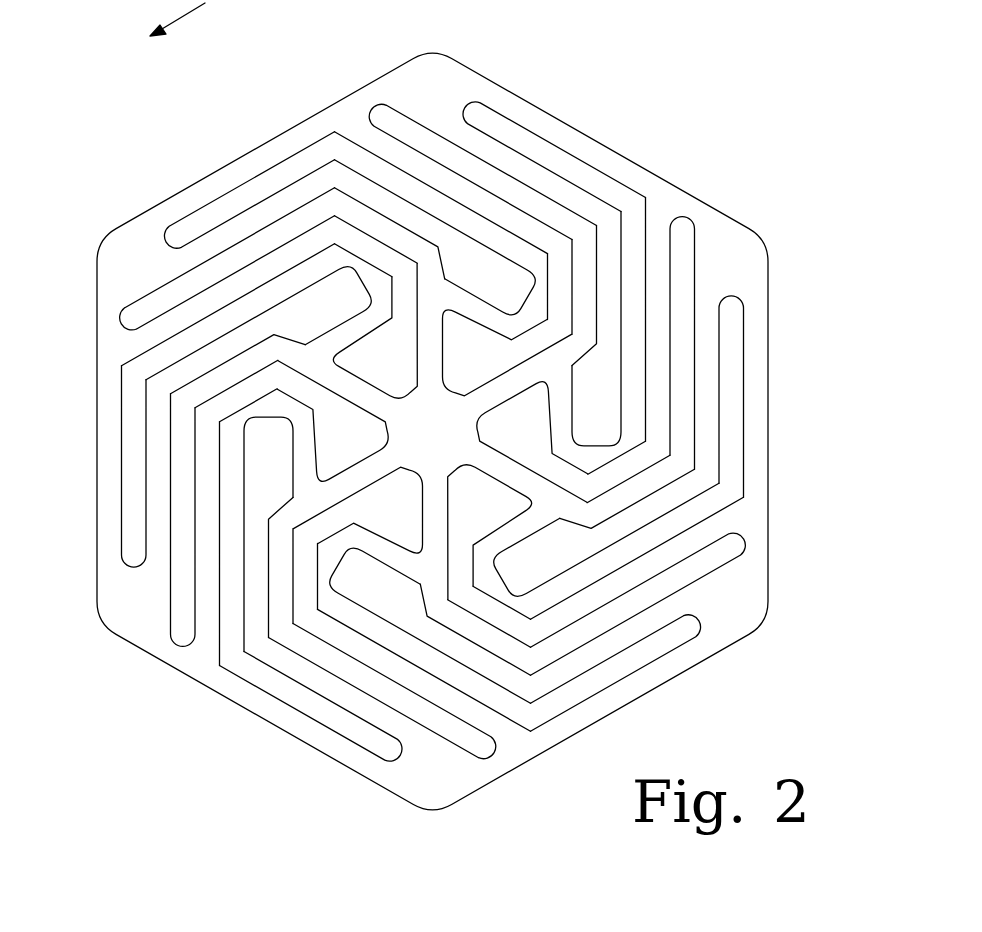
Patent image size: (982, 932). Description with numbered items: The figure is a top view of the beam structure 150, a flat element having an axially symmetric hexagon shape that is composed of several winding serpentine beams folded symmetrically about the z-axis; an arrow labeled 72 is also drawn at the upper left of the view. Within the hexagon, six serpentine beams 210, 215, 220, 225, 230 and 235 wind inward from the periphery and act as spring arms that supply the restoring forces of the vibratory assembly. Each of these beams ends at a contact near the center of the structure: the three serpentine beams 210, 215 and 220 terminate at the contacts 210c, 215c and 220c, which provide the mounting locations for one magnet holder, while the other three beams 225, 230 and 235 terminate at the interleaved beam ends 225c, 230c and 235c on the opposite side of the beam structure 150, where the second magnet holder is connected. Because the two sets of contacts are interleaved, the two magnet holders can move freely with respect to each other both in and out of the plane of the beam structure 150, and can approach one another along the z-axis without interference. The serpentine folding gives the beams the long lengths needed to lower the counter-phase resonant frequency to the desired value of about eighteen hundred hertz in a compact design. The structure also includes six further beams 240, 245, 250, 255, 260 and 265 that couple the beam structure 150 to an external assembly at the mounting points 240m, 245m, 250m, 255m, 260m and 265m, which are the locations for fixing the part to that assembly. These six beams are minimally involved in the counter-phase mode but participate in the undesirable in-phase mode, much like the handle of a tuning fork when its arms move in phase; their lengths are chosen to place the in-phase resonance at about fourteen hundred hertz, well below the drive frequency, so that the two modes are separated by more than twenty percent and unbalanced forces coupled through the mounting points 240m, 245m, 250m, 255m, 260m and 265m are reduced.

The flow direction arrow 72 is at (177, 18).
The beam structure 150 is at (353, 770).
The serpentine beam 210 is at (228, 292).
The serpentine beam 215 is at (650, 457).
The serpentine beam 220 is at (437, 695).
The serpentine beam 225 is at (433, 173).
The serpentine beam 230 is at (597, 598).
The serpentine beam 235 is at (215, 407).
The beam 240 is at (378, 195).
The beam 245 is at (615, 315).
The beam 250 is at (657, 508).
The beam 255 is at (487, 665).
The beam 260 is at (313, 680).
The beam 265 is at (205, 355).
The contact 210c is at (405, 364).
The contact 215c is at (542, 444).
The contact 220c is at (410, 516).
The contact 225c is at (500, 364).
The contact 230c is at (502, 516).
The contact 235c is at (372, 444).
The mounting point 240m is at (512, 284).
The mounting point 245m is at (622, 390).
The mounting point 250m is at (585, 560).
The mounting point 255m is at (415, 602).
The mounting point 260m is at (298, 500).
The mounting point 265m is at (335, 329).